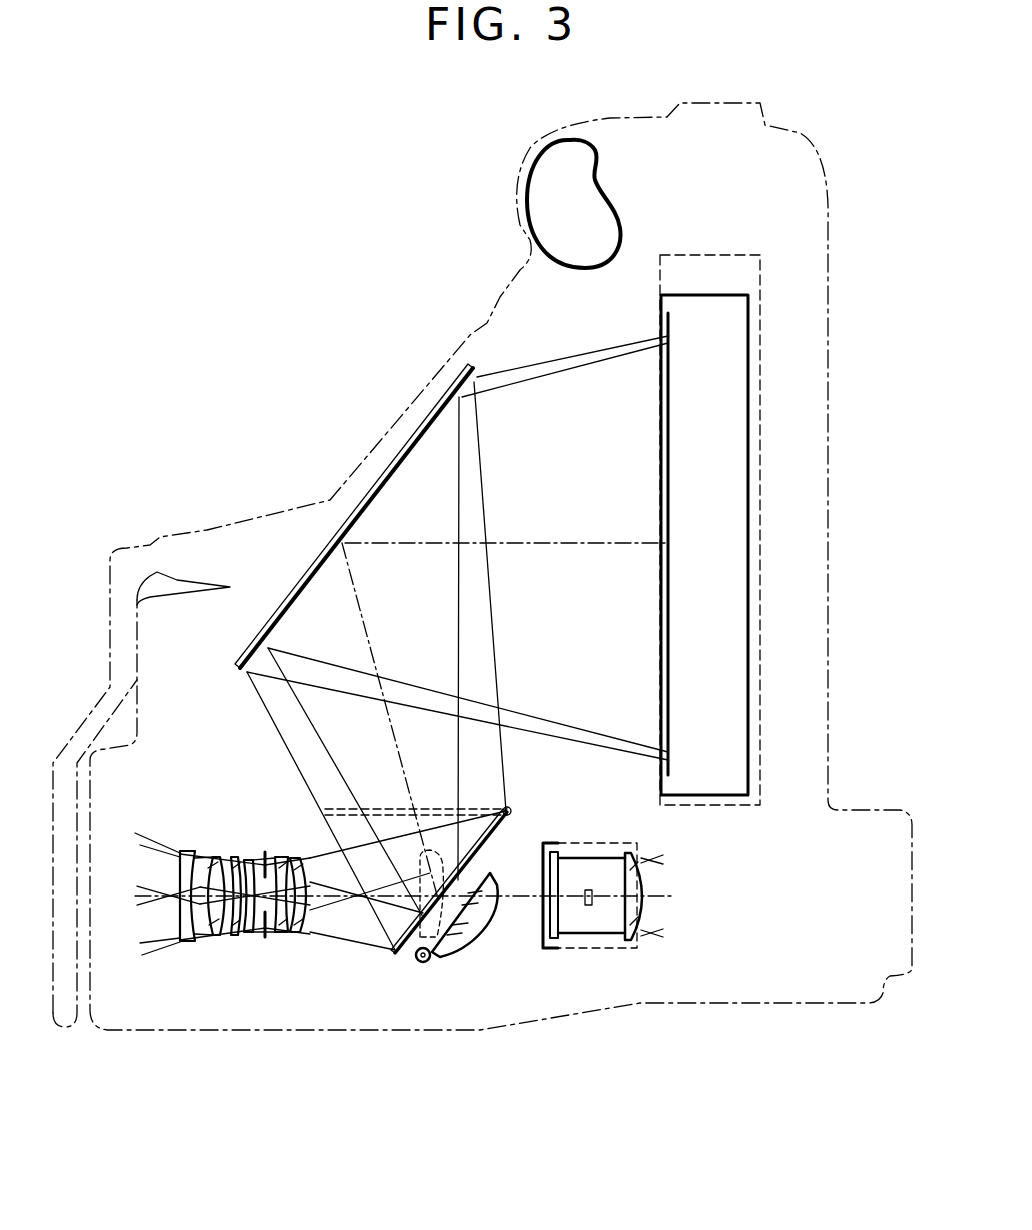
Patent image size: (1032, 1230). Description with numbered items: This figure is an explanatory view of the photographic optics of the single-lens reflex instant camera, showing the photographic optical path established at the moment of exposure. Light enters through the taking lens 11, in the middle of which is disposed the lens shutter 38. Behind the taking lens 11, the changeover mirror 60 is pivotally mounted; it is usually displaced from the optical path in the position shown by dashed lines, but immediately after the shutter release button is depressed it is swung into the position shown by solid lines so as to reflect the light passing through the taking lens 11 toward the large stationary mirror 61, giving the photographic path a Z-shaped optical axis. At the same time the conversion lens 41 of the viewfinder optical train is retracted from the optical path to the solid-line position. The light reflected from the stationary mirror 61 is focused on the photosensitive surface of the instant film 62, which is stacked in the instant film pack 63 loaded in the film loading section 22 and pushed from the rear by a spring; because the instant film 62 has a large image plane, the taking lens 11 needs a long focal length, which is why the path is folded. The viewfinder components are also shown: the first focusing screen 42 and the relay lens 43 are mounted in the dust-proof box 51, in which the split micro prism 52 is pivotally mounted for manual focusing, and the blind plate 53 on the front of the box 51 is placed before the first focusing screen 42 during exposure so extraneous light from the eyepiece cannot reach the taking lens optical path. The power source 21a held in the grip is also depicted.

The taking lens 11 is at (228, 835).
The power source 21a is at (595, 162).
The film loading section 22 is at (710, 253).
The lens shutter 38 is at (265, 937).
The conversion lens 41 is at (455, 955).
The first focusing screen 42 is at (565, 878).
The relay lens 43 is at (647, 882).
The dust-proof box 51 is at (615, 953).
The split micro prism 52 is at (588, 905).
The blind plate 53 is at (540, 912).
The changeover mirror 60 is at (433, 807).
The stationary mirror 61 is at (393, 465).
The instant film 62 is at (668, 435).
The instant film pack 63 is at (720, 293).